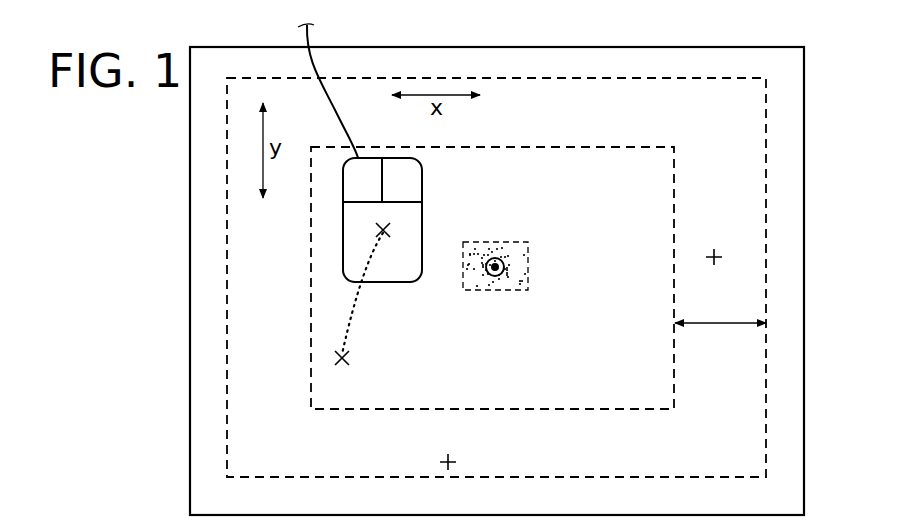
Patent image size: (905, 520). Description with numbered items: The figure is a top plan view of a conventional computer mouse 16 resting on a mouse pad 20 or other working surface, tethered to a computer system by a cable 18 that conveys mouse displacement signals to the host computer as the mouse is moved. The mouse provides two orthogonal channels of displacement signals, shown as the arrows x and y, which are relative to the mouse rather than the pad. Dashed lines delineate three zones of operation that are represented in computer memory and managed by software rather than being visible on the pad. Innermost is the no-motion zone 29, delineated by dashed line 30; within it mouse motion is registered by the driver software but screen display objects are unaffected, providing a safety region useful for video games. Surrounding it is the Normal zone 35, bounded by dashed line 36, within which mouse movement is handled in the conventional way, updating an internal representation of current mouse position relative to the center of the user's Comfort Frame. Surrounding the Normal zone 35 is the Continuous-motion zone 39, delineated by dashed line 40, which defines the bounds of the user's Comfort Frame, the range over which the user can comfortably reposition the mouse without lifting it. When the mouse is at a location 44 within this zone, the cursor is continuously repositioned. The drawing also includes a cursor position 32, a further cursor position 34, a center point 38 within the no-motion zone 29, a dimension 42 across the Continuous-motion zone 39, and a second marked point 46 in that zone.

The computer mouse 16 is at (343, 240).
The cable 18 is at (310, 37).
The mouse pad 20 is at (804, 65).
The no-motion zone 29 is at (512, 262).
The dashed line 30 is at (497, 240).
The cursor position 32 is at (395, 232).
The cursor starting position 34 is at (355, 357).
The Normal zone 35 is at (664, 402).
The dashed line 36 is at (356, 292).
The target center 38 is at (491, 279).
The Continuous-motion zone 39 is at (752, 108).
The dashed line 40 is at (516, 76).
The distance between regions 42 is at (720, 330).
The location 44 is at (718, 252).
The point in outer region 46 is at (455, 457).